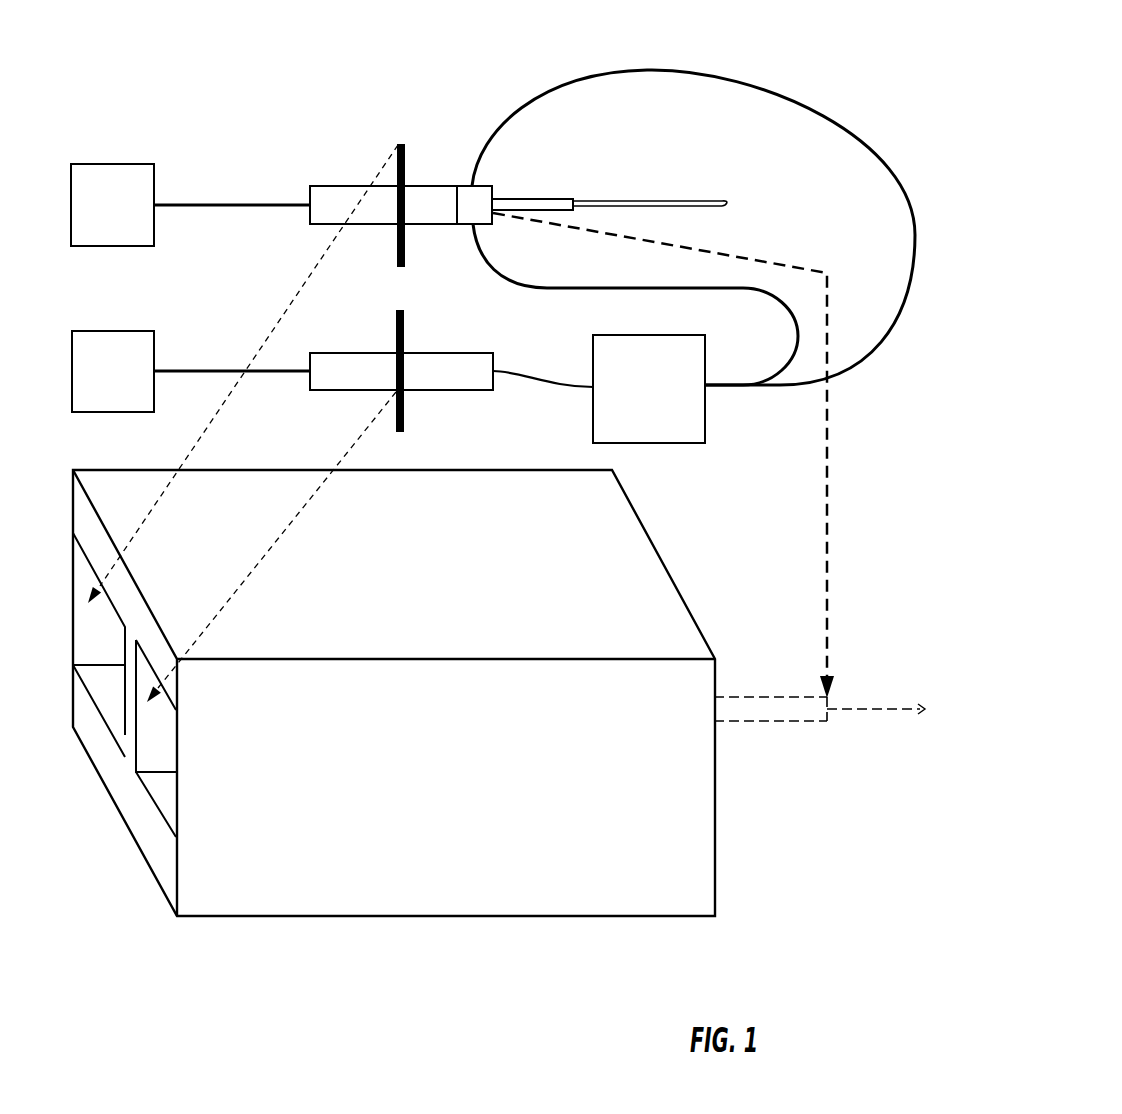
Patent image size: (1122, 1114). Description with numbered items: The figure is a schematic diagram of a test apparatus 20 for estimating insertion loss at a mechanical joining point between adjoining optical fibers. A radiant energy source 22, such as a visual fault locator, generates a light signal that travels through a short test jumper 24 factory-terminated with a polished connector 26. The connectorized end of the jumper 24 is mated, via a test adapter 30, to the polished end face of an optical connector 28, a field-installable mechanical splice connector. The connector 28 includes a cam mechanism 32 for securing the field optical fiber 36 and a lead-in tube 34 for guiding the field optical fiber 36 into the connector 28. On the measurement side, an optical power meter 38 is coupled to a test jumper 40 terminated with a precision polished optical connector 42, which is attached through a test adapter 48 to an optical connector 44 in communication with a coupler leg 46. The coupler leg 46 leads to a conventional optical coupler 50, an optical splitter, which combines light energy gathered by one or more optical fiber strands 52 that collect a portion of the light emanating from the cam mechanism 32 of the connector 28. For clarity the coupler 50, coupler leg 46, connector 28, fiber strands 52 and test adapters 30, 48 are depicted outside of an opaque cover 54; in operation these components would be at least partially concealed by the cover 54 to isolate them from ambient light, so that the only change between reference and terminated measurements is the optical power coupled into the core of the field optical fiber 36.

The test apparatus 20 is at (216, 91).
The radiant energy source 22 is at (123, 220).
The test jumper 24 is at (273, 200).
The polished connector 26 is at (342, 186).
The optical connector 28 is at (437, 186).
The test adapter 30 is at (403, 143).
The cam mechanism 32 is at (467, 186).
The lead-in tube 34 is at (513, 197).
The field optical fiber 36 is at (608, 203).
The optical power meter 38 is at (123, 386).
The test jumper 40 is at (170, 370).
The precision polished optical connector 42 is at (345, 352).
The optical connector 44 is at (435, 352).
The coupler leg 46 is at (550, 384).
The test adapter 48 is at (402, 434).
The optical coupler 50 is at (647, 443).
The optical fiber strands 52 is at (707, 70).
The opaque cover 54 is at (403, 783).